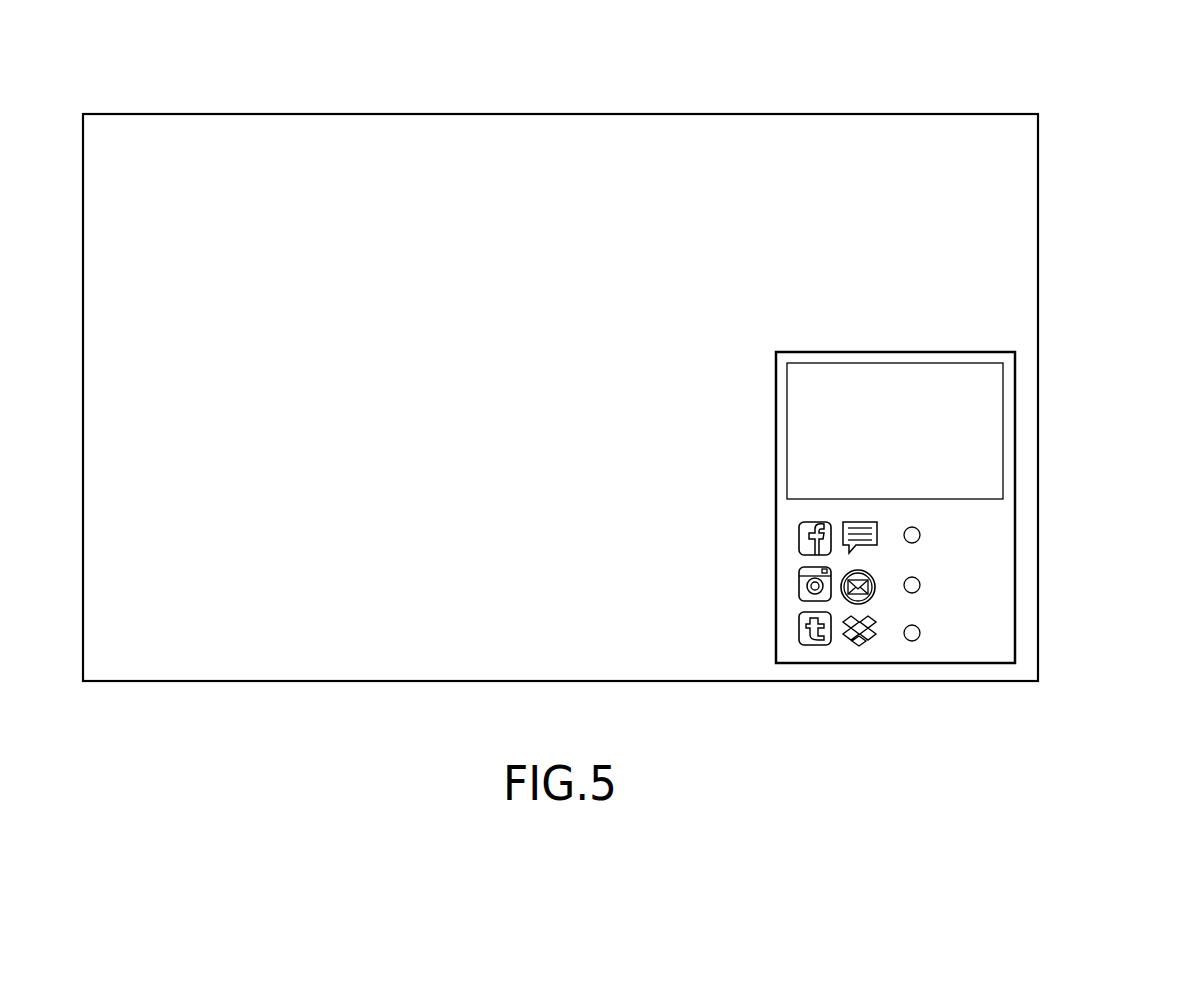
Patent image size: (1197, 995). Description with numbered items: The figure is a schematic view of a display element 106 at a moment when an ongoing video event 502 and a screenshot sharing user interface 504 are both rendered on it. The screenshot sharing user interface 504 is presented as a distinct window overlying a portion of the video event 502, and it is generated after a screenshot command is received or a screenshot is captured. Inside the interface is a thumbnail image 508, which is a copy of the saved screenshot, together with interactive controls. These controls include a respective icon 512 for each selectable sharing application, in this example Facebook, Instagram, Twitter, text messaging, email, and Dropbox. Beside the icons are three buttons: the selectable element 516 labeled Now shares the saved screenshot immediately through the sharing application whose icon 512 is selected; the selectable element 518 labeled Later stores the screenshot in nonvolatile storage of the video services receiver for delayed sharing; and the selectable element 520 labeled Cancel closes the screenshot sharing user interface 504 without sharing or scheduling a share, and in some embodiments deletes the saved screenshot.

The display element 106 is at (1008, 97).
The video event 502 is at (124, 147).
The screenshot sharing user interface 504 is at (930, 352).
The thumbnail image 508 is at (825, 394).
The icon 512 is at (798, 632).
The selectable element 516 is at (918, 542).
The selectable element 518 is at (918, 592).
The selectable element 520 is at (916, 641).